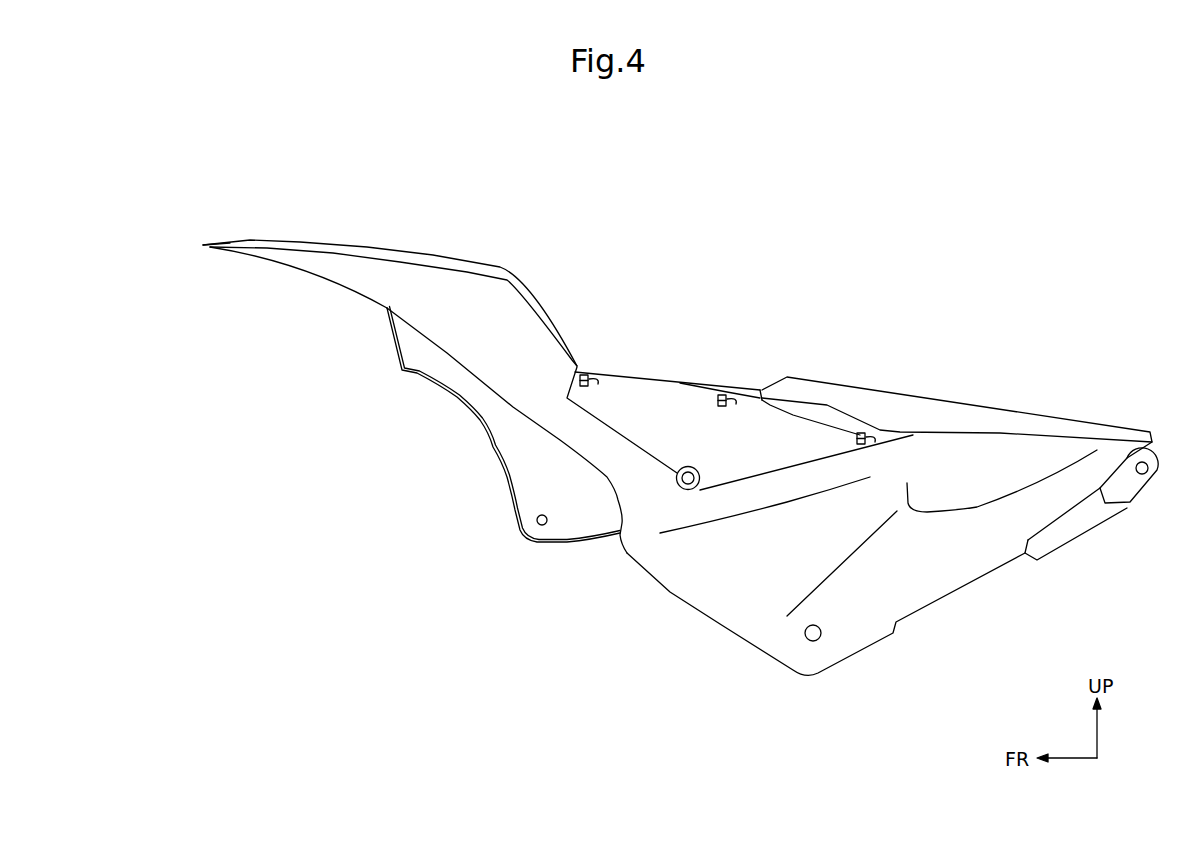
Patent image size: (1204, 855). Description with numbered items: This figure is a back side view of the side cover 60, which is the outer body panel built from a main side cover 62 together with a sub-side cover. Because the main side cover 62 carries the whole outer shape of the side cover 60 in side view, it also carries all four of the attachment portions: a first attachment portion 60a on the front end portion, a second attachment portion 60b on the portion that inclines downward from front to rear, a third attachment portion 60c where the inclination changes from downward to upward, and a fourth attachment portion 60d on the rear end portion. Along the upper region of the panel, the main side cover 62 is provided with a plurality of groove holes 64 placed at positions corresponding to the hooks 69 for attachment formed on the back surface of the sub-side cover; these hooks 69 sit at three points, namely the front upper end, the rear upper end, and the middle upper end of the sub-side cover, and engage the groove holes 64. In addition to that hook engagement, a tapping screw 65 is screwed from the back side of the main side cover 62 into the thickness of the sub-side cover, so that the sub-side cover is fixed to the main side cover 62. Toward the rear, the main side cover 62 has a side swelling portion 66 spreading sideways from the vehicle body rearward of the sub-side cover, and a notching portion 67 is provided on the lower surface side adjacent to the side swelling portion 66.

The side cover 60 is at (940, 161).
The first attachment portion 60a is at (243, 244).
The second attachment portion 60b is at (540, 526).
The third attachment portion 60c is at (807, 641).
The fourth attachment portion 60d is at (1146, 478).
The main side cover 62 is at (497, 266).
The groove holes 64 is at (585, 374).
The tapping screw 65 is at (688, 490).
The side swelling portion 66 is at (902, 555).
The notching portion 67 is at (970, 587).
The hooks for attachment 69 is at (598, 380).